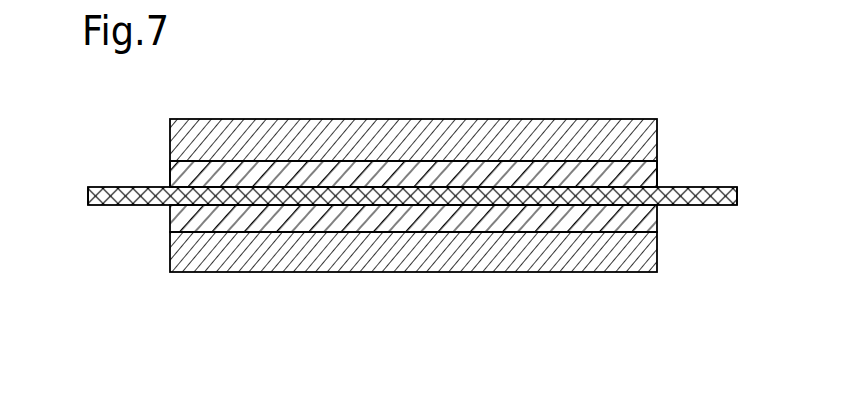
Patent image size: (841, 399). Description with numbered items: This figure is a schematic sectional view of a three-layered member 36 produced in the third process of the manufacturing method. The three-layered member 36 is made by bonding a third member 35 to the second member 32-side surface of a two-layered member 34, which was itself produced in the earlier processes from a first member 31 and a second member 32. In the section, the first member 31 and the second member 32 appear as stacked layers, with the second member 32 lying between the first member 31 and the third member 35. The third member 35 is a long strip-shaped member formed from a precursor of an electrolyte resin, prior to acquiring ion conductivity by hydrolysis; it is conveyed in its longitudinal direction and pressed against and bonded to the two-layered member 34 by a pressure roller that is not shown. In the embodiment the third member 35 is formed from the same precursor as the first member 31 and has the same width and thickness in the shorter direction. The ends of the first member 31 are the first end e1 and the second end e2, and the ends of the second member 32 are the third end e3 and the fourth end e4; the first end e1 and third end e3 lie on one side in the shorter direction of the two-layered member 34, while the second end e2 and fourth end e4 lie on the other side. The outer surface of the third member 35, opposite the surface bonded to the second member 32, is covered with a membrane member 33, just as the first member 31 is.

The first member 31 is at (605, 208).
The second member 32 is at (546, 183).
The membrane member 33 is at (353, 137).
The two-layered member 34 is at (468, 239).
The third member 35 is at (480, 190).
The three-layered member 36 is at (454, 263).
The first end e1 is at (170, 178).
The second end e2 is at (657, 178).
The third end e3 is at (90, 193).
The fourth end e4 is at (737, 193).